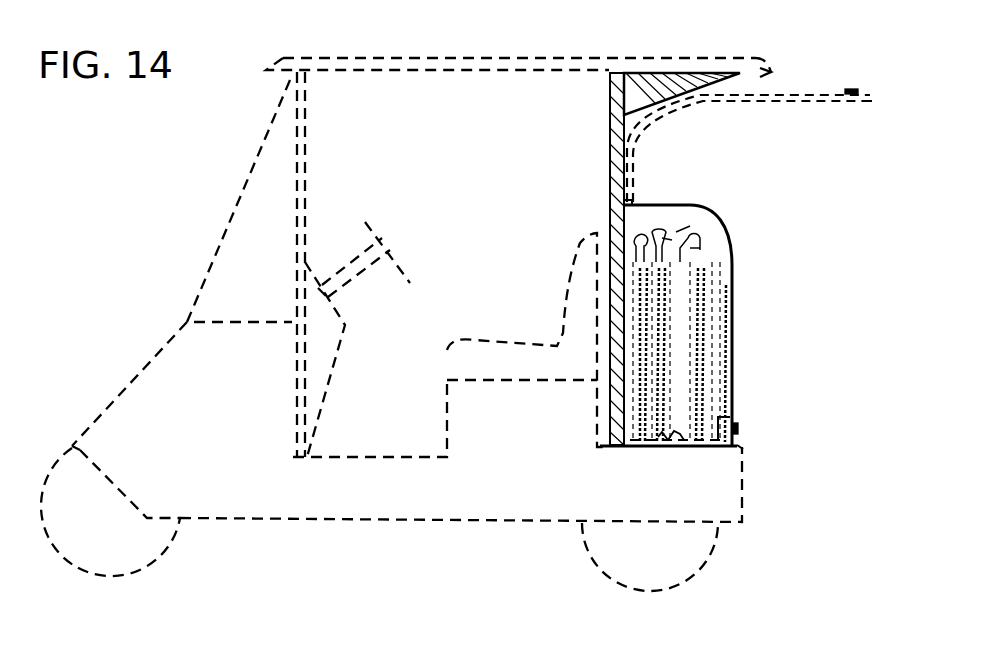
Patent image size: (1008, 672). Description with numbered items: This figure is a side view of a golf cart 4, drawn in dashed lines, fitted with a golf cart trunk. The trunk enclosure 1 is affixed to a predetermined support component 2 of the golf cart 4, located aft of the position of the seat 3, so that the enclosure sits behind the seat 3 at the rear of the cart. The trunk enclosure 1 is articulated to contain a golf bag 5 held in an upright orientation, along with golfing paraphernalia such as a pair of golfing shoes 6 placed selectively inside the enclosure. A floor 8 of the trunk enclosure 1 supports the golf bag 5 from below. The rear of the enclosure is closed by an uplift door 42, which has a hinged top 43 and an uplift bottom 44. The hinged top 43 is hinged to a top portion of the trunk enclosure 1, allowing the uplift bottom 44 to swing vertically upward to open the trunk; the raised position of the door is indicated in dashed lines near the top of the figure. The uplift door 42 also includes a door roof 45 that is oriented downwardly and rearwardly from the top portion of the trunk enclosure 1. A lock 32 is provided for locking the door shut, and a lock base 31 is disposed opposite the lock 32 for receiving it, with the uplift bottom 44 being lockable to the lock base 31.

The trunk enclosure 1 is at (690, 314).
The support component 2 is at (609, 127).
The seat 3 is at (570, 263).
The golf cart 4 is at (407, 540).
The golf bag 5 is at (703, 262).
The pair of golfing shoes 6 is at (674, 447).
The floor 8 is at (627, 447).
The lock base 31 is at (723, 418).
The lock 32 is at (851, 89).
The uplift door 42 is at (789, 92).
The hinged top 43 is at (628, 198).
The uplift bottom 44 is at (868, 102).
The door roof 45 is at (722, 203).